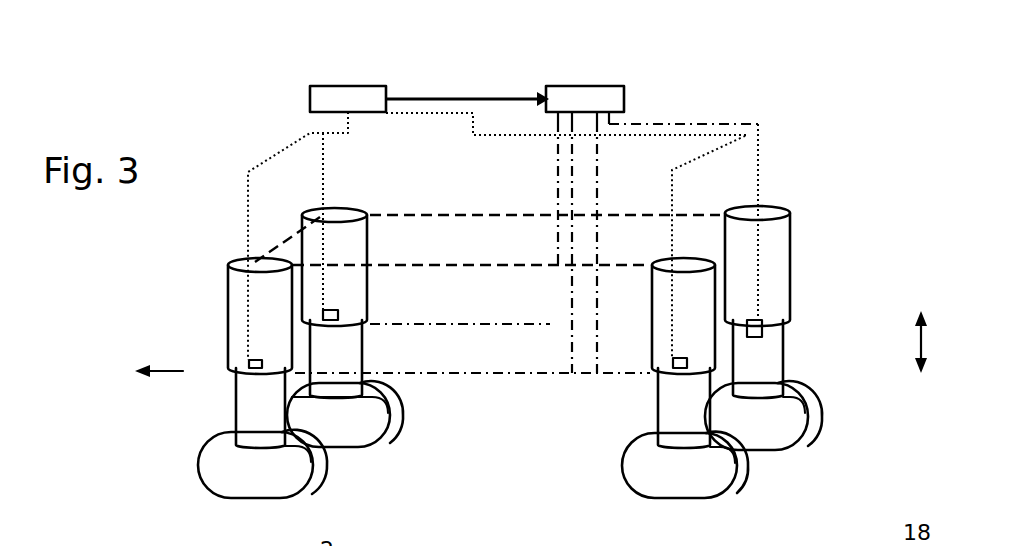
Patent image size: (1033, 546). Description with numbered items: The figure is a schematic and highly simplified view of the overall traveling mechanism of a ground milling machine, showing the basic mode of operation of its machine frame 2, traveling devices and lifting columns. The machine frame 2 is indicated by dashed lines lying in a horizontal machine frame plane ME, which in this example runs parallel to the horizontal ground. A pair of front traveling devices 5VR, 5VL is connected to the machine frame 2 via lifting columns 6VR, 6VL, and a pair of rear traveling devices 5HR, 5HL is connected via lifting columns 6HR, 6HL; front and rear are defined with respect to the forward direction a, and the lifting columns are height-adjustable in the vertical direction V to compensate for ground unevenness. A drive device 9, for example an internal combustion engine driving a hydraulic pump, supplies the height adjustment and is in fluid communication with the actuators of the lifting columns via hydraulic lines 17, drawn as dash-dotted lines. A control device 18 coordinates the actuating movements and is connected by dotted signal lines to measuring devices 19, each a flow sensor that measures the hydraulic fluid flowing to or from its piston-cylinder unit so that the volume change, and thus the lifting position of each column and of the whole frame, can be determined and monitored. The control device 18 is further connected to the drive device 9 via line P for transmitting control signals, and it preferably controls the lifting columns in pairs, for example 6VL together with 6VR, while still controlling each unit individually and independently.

The machine frame 2 is at (420, 212).
The front left traveling device 5VL is at (235, 483).
The front right traveling device 5VR is at (360, 422).
The rear left traveling device 5HL is at (697, 472).
The rear right traveling device 5HR is at (772, 435).
The front left lifting column 6VL is at (248, 385).
The front right lifting column 6VR is at (348, 347).
The rear left lifting column 6HL is at (673, 397).
The rear right lifting column 6HR is at (772, 360).
The drive device 9 is at (597, 98).
The hydraulic lines 17 is at (697, 123).
The control device 18 is at (360, 98).
The measuring device 19 is at (323, 313).
The line P is at (483, 97).
The machine frame plane ME is at (498, 235).
The forward direction a is at (149, 369).
The vertical direction V is at (920, 322).